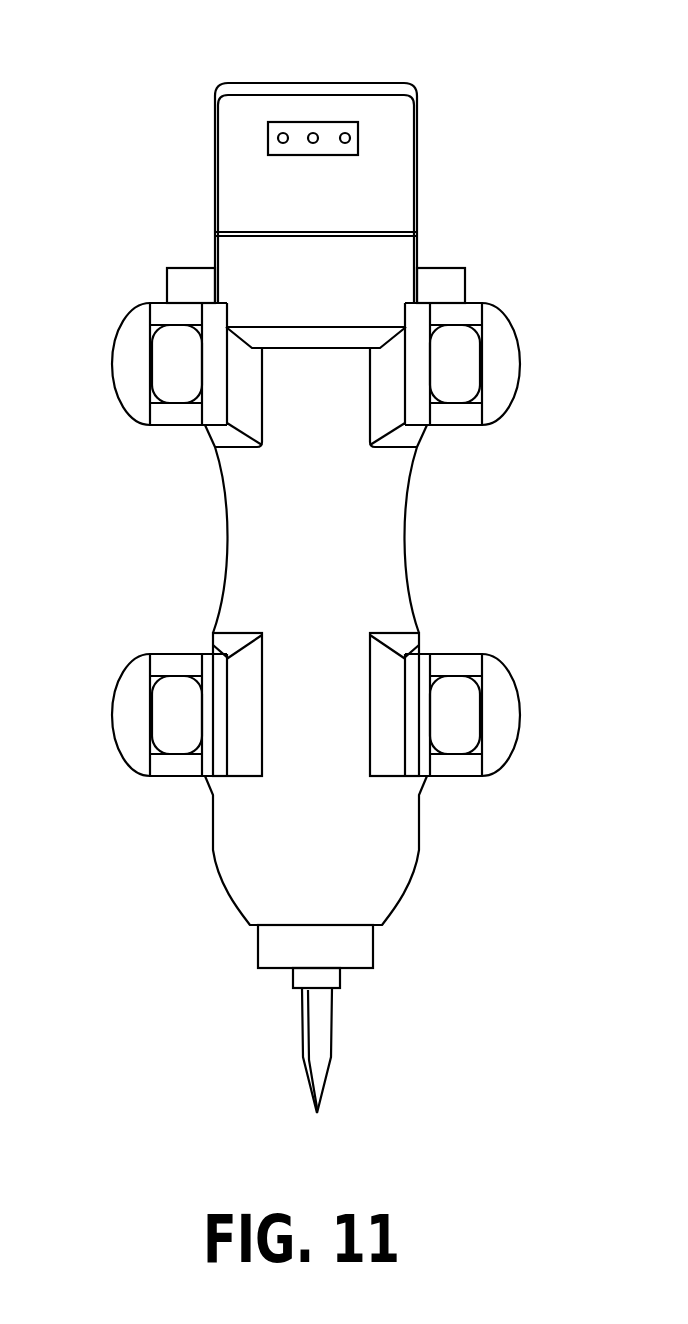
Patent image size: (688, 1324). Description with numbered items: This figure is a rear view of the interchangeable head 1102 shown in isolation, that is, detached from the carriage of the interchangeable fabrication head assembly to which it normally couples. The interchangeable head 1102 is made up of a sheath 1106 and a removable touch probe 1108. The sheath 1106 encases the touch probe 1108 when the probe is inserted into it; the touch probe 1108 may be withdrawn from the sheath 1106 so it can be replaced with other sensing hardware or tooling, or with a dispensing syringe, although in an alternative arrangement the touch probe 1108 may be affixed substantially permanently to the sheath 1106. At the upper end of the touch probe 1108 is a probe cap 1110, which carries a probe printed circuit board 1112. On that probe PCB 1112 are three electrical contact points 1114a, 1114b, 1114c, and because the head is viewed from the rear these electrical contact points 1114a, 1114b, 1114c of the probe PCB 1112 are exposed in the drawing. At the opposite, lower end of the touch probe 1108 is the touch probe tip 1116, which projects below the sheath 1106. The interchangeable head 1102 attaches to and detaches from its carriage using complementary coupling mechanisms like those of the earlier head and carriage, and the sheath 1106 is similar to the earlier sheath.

The interchangeable head 1102 is at (159, 76).
The sheath 1106 is at (228, 552).
The touch probe 1108 is at (237, 207).
The probe cap 1110 is at (417, 147).
The probe printed circuit board 1112 is at (270, 142).
The electrical contact point 1114a is at (282, 132).
The electrical contact point 1114b is at (313, 132).
The electrical contact point 1114c is at (348, 130).
The touch probe tip 1116 is at (300, 1033).